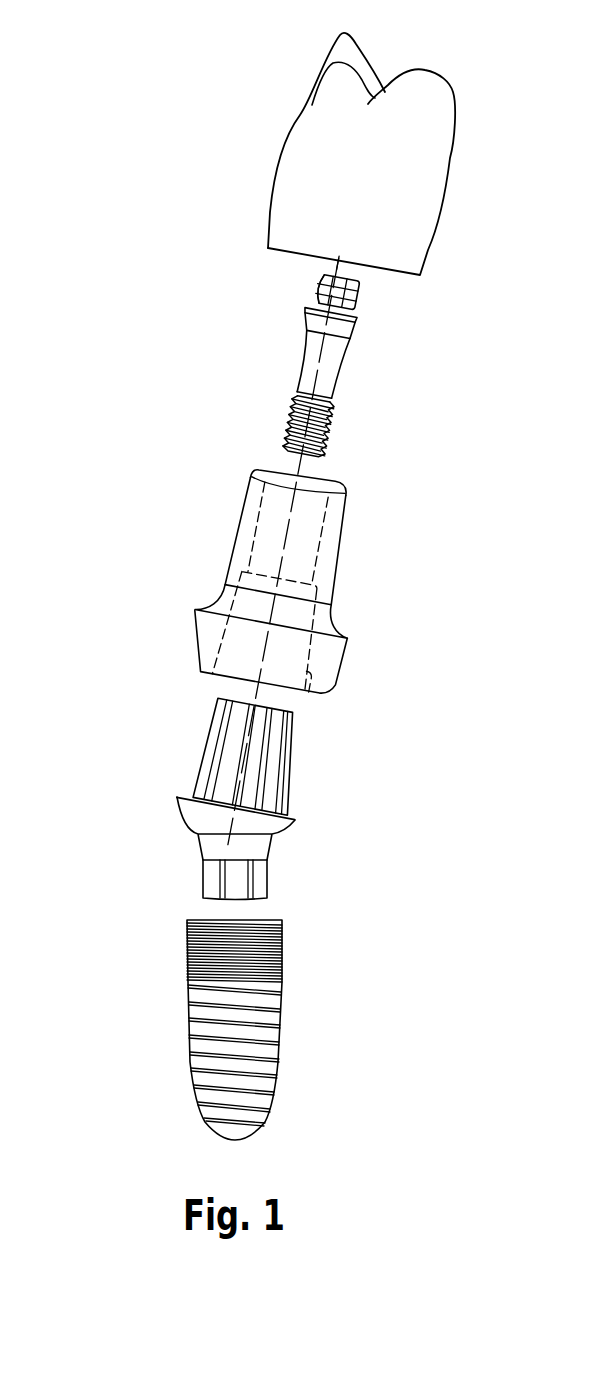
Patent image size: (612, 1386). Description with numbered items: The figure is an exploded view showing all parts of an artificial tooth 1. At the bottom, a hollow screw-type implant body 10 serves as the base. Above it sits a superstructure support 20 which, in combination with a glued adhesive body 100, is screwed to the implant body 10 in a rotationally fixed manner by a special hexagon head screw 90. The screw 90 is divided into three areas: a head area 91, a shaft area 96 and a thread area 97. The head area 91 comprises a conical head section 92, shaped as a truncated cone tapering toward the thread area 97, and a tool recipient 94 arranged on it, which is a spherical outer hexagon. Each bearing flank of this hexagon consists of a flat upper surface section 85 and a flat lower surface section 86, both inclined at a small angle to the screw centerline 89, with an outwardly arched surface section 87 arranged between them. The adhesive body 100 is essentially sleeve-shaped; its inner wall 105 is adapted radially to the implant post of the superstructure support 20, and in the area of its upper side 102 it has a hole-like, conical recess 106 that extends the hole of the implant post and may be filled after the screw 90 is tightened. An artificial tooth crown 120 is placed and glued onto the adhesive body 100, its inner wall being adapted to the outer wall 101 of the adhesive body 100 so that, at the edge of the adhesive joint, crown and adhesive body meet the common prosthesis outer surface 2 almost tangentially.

The artificial tooth 1 is at (303, 586).
The prosthesis outer surface 2 is at (258, 154).
The tooth crown 120 is at (282, 155).
The upper surface section 85 is at (320, 280).
The curved surface section 87 is at (320, 290).
The lower surface section 86 is at (320, 298).
The tool recipient 94 is at (362, 298).
The head area 91 is at (357, 333).
The head section 92 is at (317, 325).
The shaft area 96 is at (342, 369).
The screw centerline 89 is at (317, 383).
The thread area 97 is at (337, 428).
The hexagon head screw 90 is at (297, 328).
The upper side 102 is at (273, 470).
The inner wall 105 is at (260, 515).
The adhesive body 100 is at (218, 552).
The outer wall 101 is at (230, 563).
The recess 106 is at (223, 642).
The superstructure support 20 is at (168, 788).
The implant body 10 is at (182, 988).